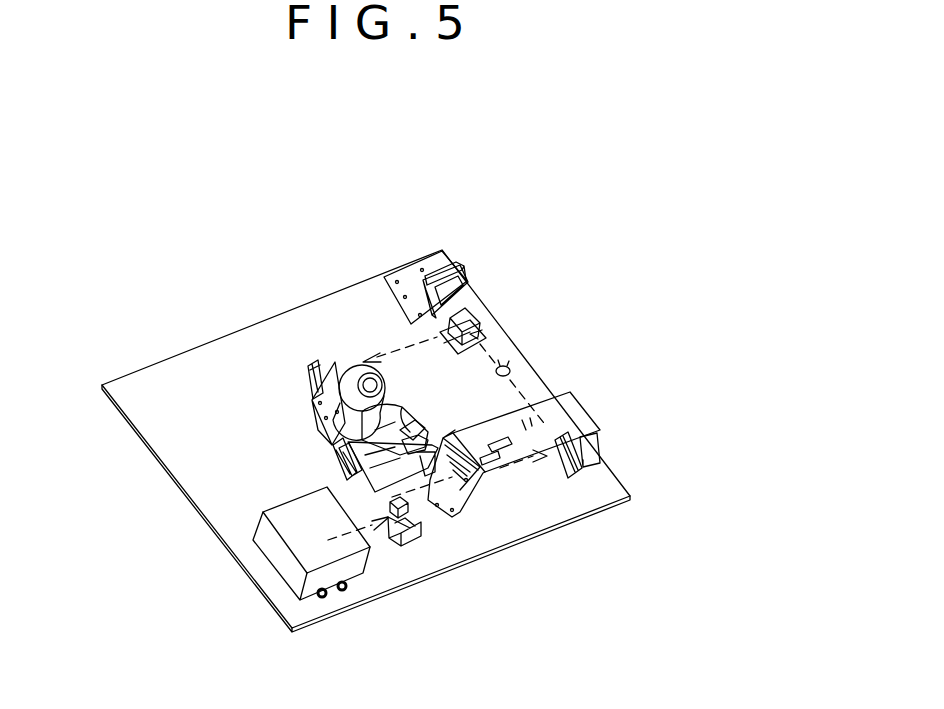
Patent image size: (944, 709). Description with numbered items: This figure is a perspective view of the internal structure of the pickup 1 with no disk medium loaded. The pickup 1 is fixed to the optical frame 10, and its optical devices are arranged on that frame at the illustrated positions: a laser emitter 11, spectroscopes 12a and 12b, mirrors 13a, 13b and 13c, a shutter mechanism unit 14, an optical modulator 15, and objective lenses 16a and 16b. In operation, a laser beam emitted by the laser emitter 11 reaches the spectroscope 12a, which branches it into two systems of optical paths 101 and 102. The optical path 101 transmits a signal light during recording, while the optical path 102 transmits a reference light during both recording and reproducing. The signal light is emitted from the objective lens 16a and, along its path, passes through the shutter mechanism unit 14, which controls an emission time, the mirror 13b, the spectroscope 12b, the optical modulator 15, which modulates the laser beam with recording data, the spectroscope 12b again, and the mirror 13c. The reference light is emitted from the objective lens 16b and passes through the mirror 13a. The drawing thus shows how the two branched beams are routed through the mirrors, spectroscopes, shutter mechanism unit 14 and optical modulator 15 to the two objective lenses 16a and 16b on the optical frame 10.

The pickup 1 is at (553, 158).
The optical frame 10 is at (178, 397).
The laser emitter 11 is at (273, 550).
The spectroscope 12a is at (408, 530).
The spectroscope 12b is at (466, 312).
The mirror 13a is at (337, 467).
The mirror 13b is at (572, 470).
The mirror 13c is at (330, 377).
The shutter mechanism unit 14 is at (510, 442).
The optical modulator 15 is at (443, 272).
The objective lens 16a is at (353, 370).
The objective lens 16b is at (408, 394).
The optical path 101 is at (510, 370).
The optical path 102 is at (383, 510).